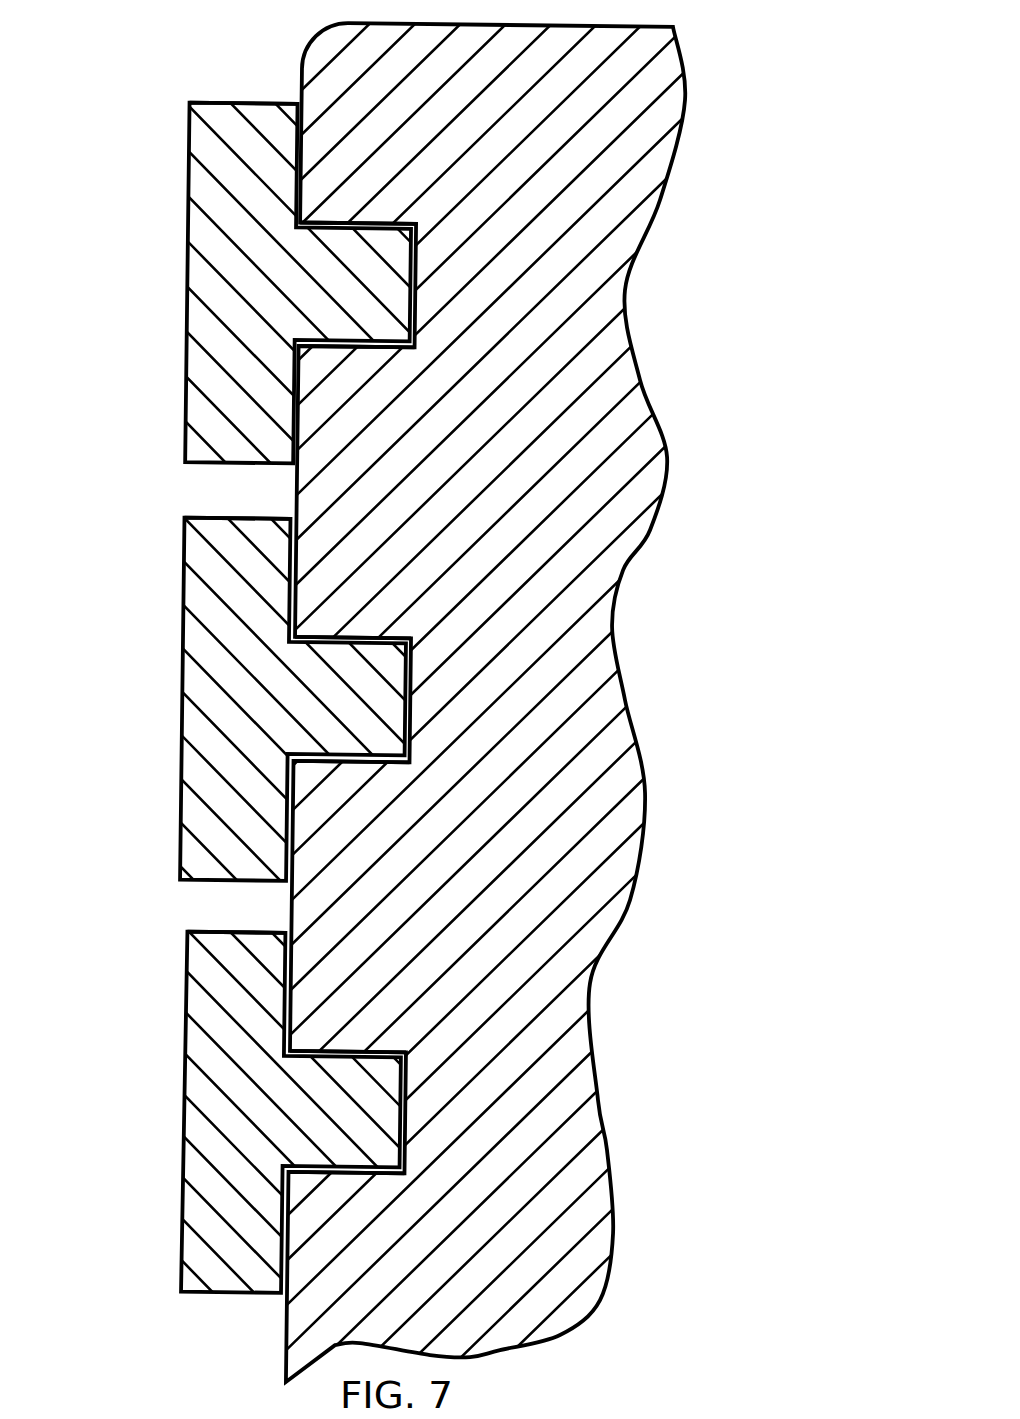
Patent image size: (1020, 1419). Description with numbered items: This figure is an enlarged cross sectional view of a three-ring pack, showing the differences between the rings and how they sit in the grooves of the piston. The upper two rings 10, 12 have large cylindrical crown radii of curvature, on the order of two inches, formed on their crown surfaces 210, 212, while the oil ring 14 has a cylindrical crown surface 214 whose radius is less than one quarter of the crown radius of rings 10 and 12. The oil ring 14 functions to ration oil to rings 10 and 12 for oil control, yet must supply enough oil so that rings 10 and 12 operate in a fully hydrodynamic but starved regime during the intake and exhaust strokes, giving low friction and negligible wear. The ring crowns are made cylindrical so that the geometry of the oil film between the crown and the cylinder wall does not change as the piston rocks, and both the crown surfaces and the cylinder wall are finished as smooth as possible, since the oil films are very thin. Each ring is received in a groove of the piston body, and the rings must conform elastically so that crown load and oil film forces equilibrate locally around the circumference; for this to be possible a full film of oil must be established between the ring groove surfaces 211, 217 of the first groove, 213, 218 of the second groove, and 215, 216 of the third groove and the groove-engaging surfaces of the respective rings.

The ring 10 is at (217, 335).
The ring 12 is at (215, 712).
The oil ring 14 is at (205, 1145).
The crown surface 210 is at (188, 182).
The crown surface 212 is at (186, 582).
The crown surface 214 is at (187, 1026).
The ring groove surface 211 is at (369, 222).
The ring groove surface 217 is at (370, 350).
The ring groove surface 213 is at (366, 637).
The ring groove surface 218 is at (364, 762).
The ring groove surface 215 is at (362, 1051).
The ring groove surface 216 is at (357, 1173).